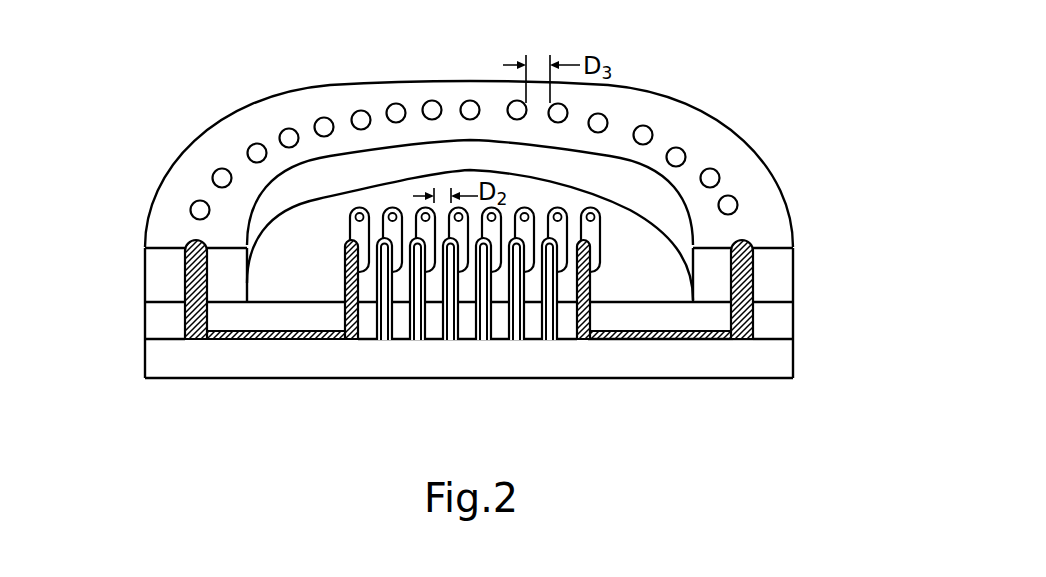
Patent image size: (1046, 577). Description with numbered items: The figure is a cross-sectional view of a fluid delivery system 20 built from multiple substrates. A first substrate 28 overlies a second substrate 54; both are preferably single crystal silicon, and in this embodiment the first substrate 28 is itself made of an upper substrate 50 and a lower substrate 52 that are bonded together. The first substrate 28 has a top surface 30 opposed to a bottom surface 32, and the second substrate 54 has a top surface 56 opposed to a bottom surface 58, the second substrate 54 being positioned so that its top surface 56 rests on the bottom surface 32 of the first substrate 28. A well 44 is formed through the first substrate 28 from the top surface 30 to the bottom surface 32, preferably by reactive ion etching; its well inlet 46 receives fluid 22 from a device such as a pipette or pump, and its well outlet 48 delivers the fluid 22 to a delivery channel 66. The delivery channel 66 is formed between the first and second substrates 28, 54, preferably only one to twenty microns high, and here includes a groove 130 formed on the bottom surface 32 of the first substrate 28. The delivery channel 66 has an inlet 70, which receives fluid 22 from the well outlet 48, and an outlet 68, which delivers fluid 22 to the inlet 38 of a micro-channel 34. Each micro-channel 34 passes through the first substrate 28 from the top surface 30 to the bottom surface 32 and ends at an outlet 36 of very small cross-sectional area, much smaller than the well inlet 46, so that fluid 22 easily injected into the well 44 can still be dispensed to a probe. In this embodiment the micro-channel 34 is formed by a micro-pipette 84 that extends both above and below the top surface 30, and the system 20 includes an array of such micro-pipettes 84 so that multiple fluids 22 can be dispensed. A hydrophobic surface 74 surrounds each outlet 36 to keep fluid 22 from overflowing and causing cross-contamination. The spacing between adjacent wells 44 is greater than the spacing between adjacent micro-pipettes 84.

The fluid delivery system 20 is at (699, 66).
The fluid 22 is at (190, 238).
The first substrate 28 is at (816, 315).
The top surface 30 is at (623, 300).
The bottom surface 32 is at (768, 340).
The micro-channel 34 is at (590, 288).
The outlet 36 is at (394, 208).
The inlet 38 is at (352, 340).
The well 44 is at (361, 110).
The well inlet 46 is at (185, 258).
The well outlet 48 is at (198, 340).
The upper substrate 50 is at (783, 278).
The lower substrate 52 is at (785, 327).
The second substrate 54 is at (527, 363).
The top surface 56 is at (440, 340).
The bottom surface 58 is at (493, 379).
The delivery channel 66 is at (662, 340).
The outlet 68 is at (585, 340).
The inlet 70 is at (745, 340).
The hydrophobic surface 74 is at (524, 208).
The micro-pipette 84 is at (334, 238).
The groove 130 is at (630, 330).